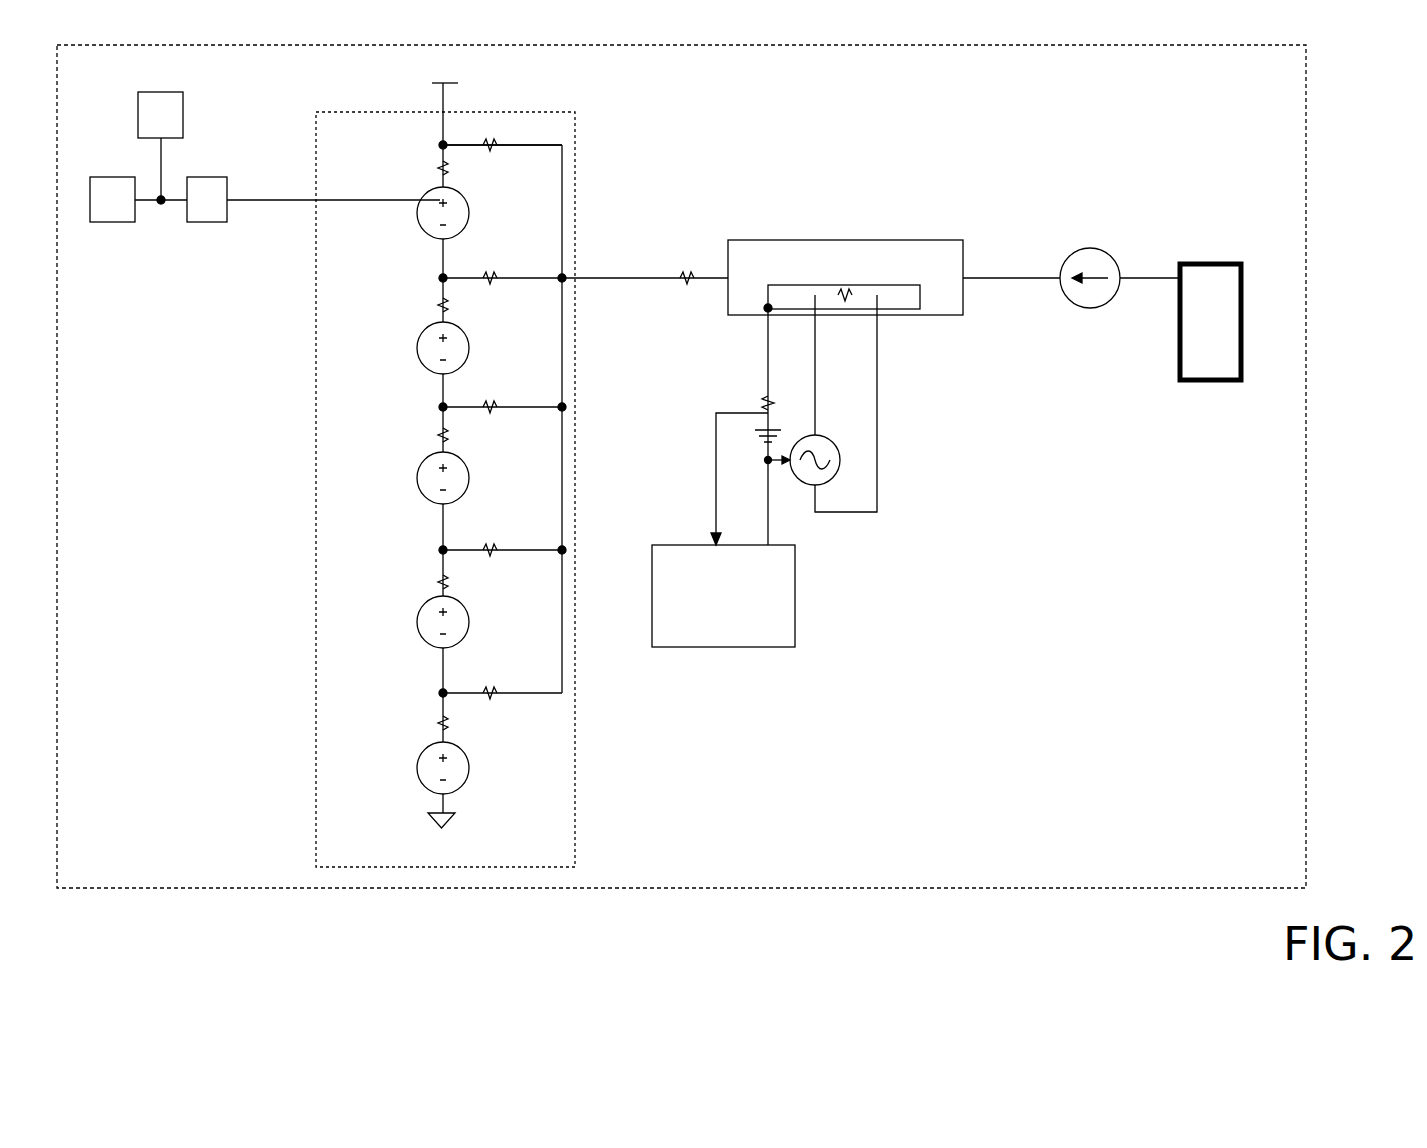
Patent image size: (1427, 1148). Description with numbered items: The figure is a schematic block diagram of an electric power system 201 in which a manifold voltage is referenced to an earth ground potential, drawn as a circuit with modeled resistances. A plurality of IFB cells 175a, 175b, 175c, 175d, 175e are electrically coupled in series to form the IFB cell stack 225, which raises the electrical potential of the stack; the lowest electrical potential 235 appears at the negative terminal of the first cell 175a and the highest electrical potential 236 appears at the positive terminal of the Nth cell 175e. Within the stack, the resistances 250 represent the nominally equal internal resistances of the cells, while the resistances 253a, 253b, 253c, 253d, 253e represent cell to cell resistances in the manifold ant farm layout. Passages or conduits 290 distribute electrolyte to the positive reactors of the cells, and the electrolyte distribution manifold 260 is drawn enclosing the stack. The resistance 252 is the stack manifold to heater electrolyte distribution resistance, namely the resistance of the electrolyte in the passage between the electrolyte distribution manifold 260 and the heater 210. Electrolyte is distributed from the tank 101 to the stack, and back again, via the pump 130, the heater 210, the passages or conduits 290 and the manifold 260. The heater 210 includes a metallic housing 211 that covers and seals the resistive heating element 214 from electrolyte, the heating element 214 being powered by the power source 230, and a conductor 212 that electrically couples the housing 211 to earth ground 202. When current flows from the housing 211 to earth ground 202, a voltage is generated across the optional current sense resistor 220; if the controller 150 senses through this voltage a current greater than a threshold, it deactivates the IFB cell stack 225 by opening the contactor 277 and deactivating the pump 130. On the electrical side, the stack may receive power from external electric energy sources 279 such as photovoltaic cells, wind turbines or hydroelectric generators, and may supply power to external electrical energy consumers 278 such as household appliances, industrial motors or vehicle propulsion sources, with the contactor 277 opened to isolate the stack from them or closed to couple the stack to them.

The tank 101 is at (1210, 322).
The pump 130 is at (1112, 253).
The controller 150 is at (652, 546).
The IFB cell 175a is at (421, 754).
The IFB cell 175b is at (421, 608).
The IFB cell 175c is at (421, 464).
The IFB cell 175d is at (421, 334).
The IFB cell 175e is at (420, 200).
The electric power system 201 is at (622, 886).
The earth ground 202 is at (760, 432).
The heater 210 is at (843, 228).
The housing 211 is at (955, 318).
The conductor 212 is at (915, 312).
The heating element 214 is at (846, 318).
The current sense resistor 220 is at (764, 405).
The IFB cell stack 225 is at (402, 147).
The power source 230 is at (823, 438).
The lowest electrical potential 235 is at (429, 820).
The highest electrical potential 236 is at (452, 100).
The resistance 250 is at (436, 170).
The resistance 252 is at (686, 283).
The resistance 253a is at (487, 700).
The resistance 253b is at (487, 557).
The resistance 253c is at (487, 414).
The resistance 253d is at (487, 285).
The resistance 253e is at (487, 152).
The electrolyte distribution manifold 260 is at (578, 728).
The contactor 277 is at (207, 199).
The electrical energy consumers 278 is at (112, 199).
The electric energy sources 279 is at (160, 115).
The passages or conduits 290 is at (537, 148).